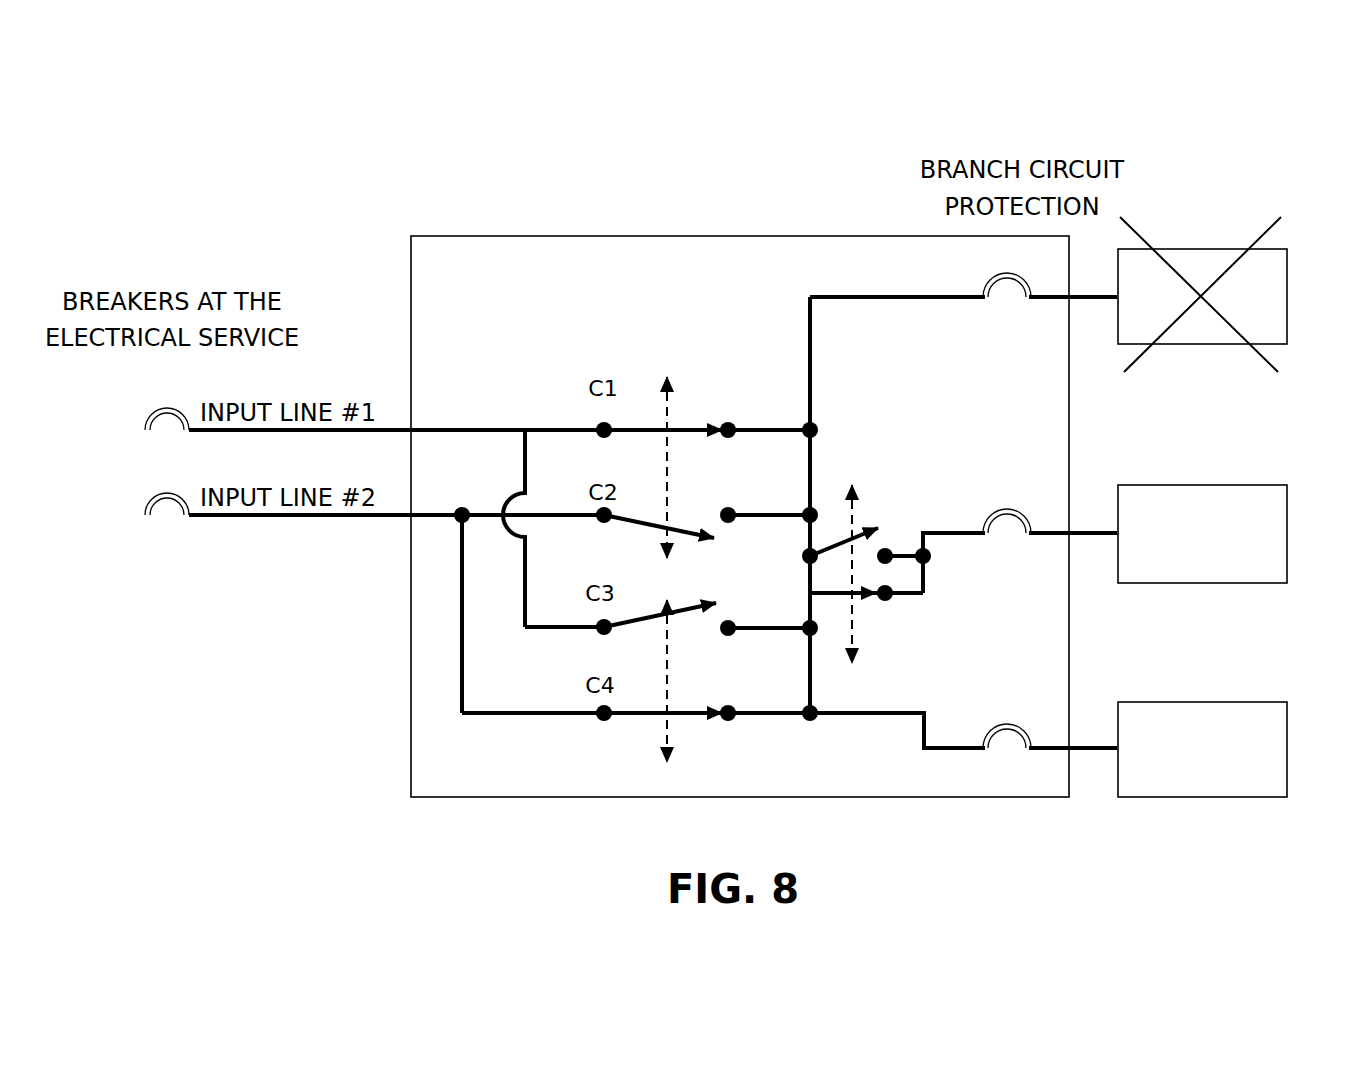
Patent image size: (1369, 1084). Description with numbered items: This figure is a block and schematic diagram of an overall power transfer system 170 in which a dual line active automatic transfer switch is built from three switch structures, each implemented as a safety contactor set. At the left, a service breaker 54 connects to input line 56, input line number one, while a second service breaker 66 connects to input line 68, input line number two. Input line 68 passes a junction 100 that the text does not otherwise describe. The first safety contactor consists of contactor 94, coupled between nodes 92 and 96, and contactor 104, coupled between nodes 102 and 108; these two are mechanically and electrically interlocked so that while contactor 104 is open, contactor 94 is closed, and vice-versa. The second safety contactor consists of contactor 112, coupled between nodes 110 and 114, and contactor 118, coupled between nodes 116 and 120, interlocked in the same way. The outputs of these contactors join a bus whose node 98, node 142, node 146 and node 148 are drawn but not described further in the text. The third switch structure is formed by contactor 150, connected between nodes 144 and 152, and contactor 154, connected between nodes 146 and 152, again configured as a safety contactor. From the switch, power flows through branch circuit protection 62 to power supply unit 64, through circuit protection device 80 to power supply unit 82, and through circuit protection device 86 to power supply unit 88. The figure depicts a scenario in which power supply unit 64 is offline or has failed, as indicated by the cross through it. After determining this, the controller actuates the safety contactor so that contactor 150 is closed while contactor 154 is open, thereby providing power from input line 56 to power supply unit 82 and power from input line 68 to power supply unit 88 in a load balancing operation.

The service breaker 54 is at (173, 408).
The input line 56 is at (268, 432).
The second service breaker 66 is at (173, 492).
The input line 68 is at (268, 517).
The junction node of input line 2 100 is at (462, 507).
The node 92 is at (600, 440).
The contactor 94 is at (683, 428).
The node 96 is at (731, 420).
The output bus node 98 is at (818, 428).
The node 102 is at (600, 525).
The contactor 104 is at (646, 535).
The node 108 is at (731, 506).
The node 110 is at (596, 633).
The node 114 is at (724, 618).
The contactor 112 is at (683, 612).
The node 116 is at (598, 722).
The contactor 118 is at (683, 718).
The node 120 is at (732, 705).
The bus node 142 is at (813, 505).
The node 144 is at (804, 562).
The node 146 is at (815, 640).
The bus node 148 is at (816, 722).
The contactor 150 is at (862, 535).
The node 152 is at (931, 562).
The contactor 154 is at (888, 600).
The branch circuit protection 62 is at (1000, 300).
The power supply unit 64 is at (1288, 293).
The power transfer system 170 is at (1283, 180).
The circuit protection device 80 is at (1002, 510).
The power supply unit 82 is at (1288, 534).
The circuit protection device 86 is at (1002, 725).
The power supply unit 88 is at (1288, 749).